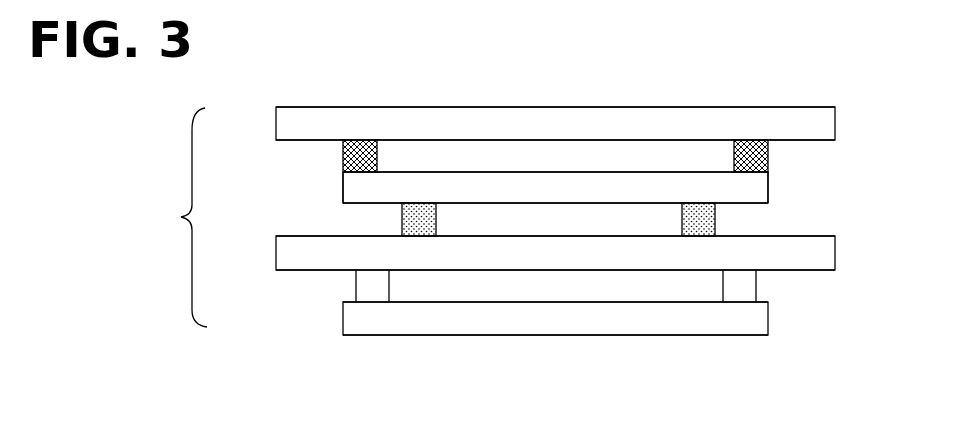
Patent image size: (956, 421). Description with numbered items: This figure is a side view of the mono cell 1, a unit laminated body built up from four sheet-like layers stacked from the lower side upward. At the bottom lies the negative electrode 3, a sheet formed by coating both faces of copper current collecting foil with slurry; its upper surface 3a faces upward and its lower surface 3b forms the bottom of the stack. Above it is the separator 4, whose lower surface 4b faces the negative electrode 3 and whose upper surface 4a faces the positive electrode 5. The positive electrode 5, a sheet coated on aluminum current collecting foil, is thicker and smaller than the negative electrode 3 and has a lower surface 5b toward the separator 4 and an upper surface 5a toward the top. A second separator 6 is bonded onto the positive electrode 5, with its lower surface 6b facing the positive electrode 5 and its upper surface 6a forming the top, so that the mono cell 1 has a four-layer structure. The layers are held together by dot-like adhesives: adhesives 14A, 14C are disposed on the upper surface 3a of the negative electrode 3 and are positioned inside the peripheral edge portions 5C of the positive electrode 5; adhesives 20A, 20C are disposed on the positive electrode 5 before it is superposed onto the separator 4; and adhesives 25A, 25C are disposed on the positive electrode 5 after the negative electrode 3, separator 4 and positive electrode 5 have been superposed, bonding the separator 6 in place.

The mono cell 1 is at (185, 217).
The negative electrode 3 is at (348, 318).
The upper surface 3a is at (766, 302).
The lower surface 3b is at (748, 335).
The separator 4 is at (298, 253).
The upper surface 4a is at (815, 236).
The lower surface 4b is at (828, 271).
The positive electrode 5 is at (350, 184).
The upper surface 5a is at (553, 172).
The lower surface 5b is at (748, 204).
The peripheral edge portions 5C is at (343, 193).
The separator 6 is at (277, 123).
The upper surface 6a is at (812, 107).
The lower surface 6b is at (808, 141).
The adhesive 14A is at (730, 289).
The adhesive 14C is at (373, 287).
The adhesive 20A is at (682, 218).
The adhesive 20C is at (402, 218).
The adhesive 25A is at (768, 158).
The adhesive 25C is at (343, 153).